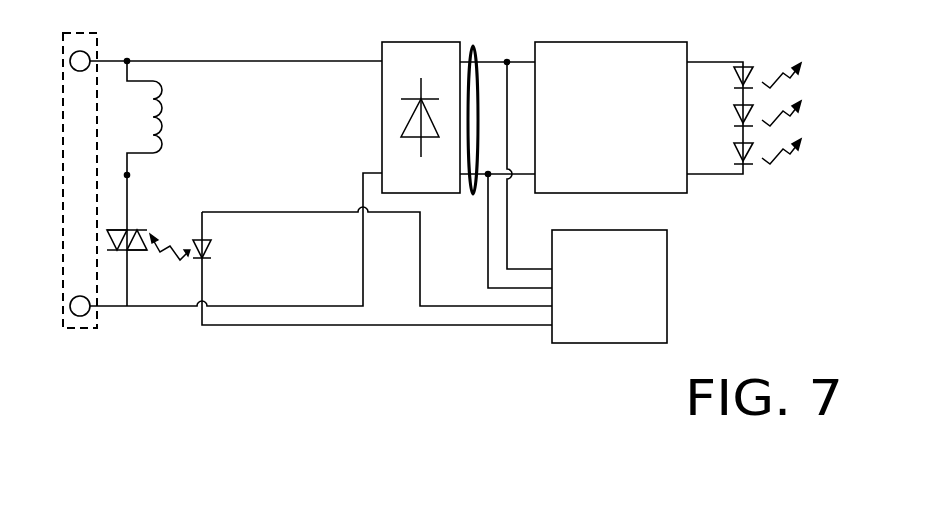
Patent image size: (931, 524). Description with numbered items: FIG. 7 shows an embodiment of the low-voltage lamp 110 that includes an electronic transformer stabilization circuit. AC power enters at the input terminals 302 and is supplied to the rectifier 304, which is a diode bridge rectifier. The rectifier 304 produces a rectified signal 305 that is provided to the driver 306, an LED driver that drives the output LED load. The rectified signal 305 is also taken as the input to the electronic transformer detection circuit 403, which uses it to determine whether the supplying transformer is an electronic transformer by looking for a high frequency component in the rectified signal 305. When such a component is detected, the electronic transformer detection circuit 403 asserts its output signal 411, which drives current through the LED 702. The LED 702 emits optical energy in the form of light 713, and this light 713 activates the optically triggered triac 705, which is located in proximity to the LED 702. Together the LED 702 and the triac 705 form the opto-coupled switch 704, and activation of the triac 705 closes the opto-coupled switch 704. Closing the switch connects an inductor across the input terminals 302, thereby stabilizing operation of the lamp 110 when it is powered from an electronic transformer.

The low-voltage lamp 110 is at (733, 287).
The input terminals 302 is at (63, 152).
The rectifier 304 is at (428, 184).
The rectified signal 305 is at (472, 46).
The driver 306 is at (634, 172).
The electronic transformer detection circuit 403 is at (627, 330).
The output signal 411 is at (473, 303).
The LED 702 is at (206, 242).
The opto-coupled switch 704 is at (177, 250).
The optically triggered triac 705 is at (127, 230).
The light 713 is at (175, 262).